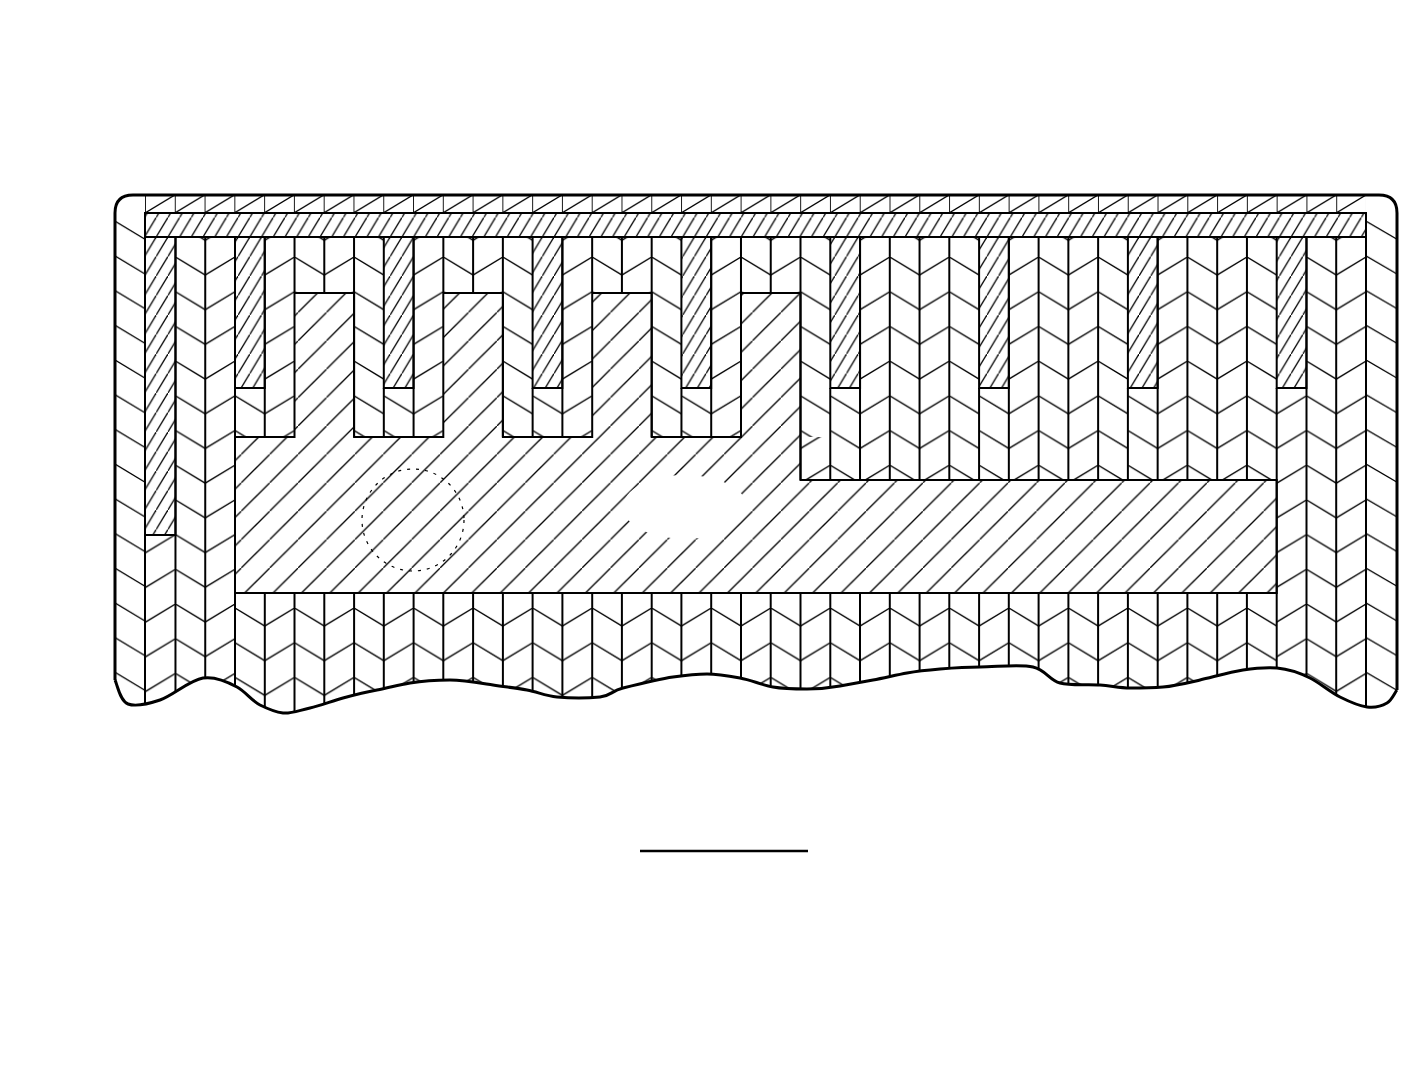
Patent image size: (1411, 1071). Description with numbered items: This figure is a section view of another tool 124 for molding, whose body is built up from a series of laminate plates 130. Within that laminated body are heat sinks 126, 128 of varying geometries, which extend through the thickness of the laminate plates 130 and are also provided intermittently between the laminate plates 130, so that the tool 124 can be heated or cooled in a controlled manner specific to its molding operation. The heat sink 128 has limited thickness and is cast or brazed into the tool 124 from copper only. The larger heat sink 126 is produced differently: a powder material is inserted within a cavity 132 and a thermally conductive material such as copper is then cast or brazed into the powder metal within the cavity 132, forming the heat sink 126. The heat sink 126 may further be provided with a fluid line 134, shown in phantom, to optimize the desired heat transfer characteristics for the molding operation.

The tool 124 is at (756, 458).
The heat sink 126 is at (756, 443).
The heat sink 128 is at (923, 232).
The laminate plates 130 is at (483, 200).
The cavity 132 is at (1077, 590).
The fluid line 134 is at (443, 598).